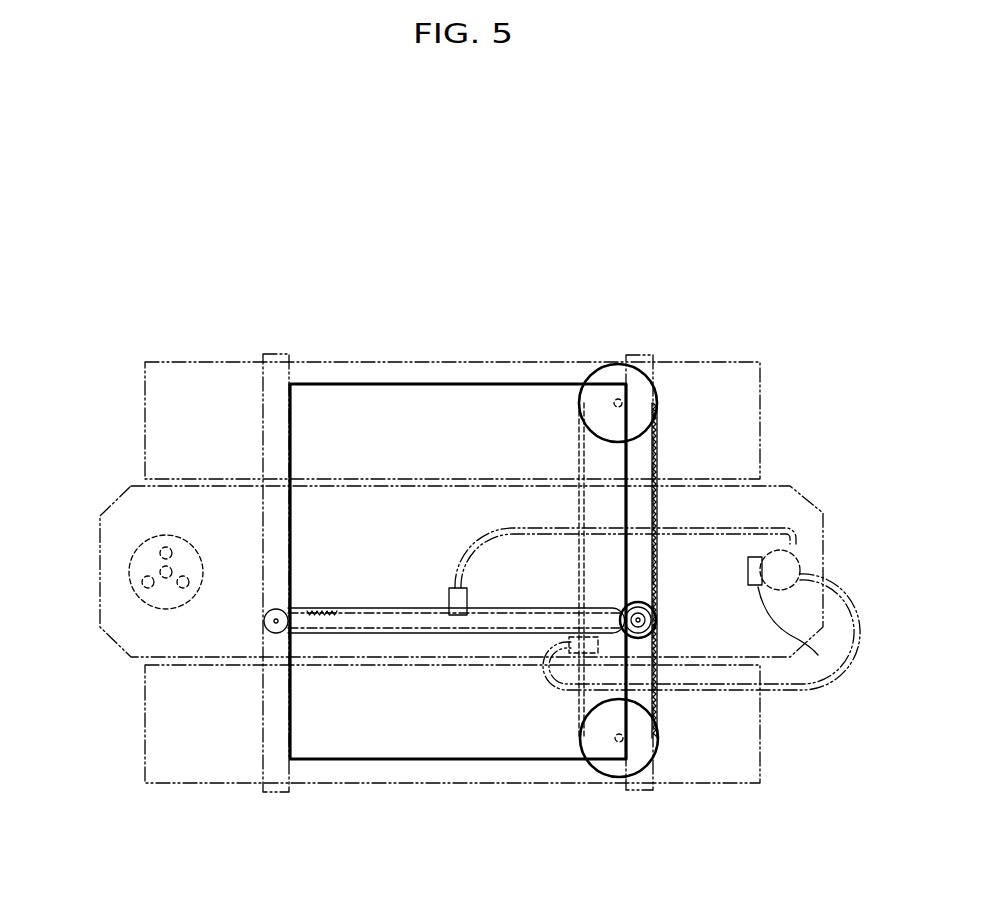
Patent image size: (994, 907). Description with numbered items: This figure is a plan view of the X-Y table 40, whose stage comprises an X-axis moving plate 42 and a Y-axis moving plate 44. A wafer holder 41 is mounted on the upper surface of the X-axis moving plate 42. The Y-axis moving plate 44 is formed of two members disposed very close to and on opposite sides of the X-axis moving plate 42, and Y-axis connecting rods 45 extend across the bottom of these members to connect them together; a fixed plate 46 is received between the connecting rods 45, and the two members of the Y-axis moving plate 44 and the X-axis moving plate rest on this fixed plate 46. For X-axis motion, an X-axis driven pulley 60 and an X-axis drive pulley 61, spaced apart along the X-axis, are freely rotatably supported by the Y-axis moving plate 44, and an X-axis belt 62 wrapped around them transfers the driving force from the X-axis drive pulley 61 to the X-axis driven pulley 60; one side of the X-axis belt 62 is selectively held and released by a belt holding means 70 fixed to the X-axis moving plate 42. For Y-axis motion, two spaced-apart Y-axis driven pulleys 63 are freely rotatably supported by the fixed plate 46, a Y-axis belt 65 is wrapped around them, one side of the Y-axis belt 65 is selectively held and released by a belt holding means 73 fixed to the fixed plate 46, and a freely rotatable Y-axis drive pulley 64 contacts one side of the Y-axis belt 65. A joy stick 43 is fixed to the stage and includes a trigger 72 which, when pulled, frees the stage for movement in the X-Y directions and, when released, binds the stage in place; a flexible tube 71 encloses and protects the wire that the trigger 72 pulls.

The X-Y table 40 is at (138, 351).
The wafer holder 41 is at (130, 566).
The X-axis moving plate 42 is at (784, 486).
The joy stick 43 is at (803, 566).
The Y-axis moving plate 44 is at (762, 378).
The Y-axis connecting rods 45 is at (267, 355).
The fixed plate 46 is at (370, 384).
The X-axis driven pulley 60 is at (268, 633).
The X-axis drive pulley 61 is at (645, 638).
The X-axis belt 62 is at (370, 634).
The Y-axis driven pulleys 63 is at (597, 370).
The Y-axis drive pulley 64 is at (658, 662).
The Y-axis belt 65 is at (658, 430).
The belt holding means 70 is at (466, 603).
The tube 71 is at (797, 528).
The trigger 72 is at (796, 635).
The belt holding means 73 is at (590, 657).